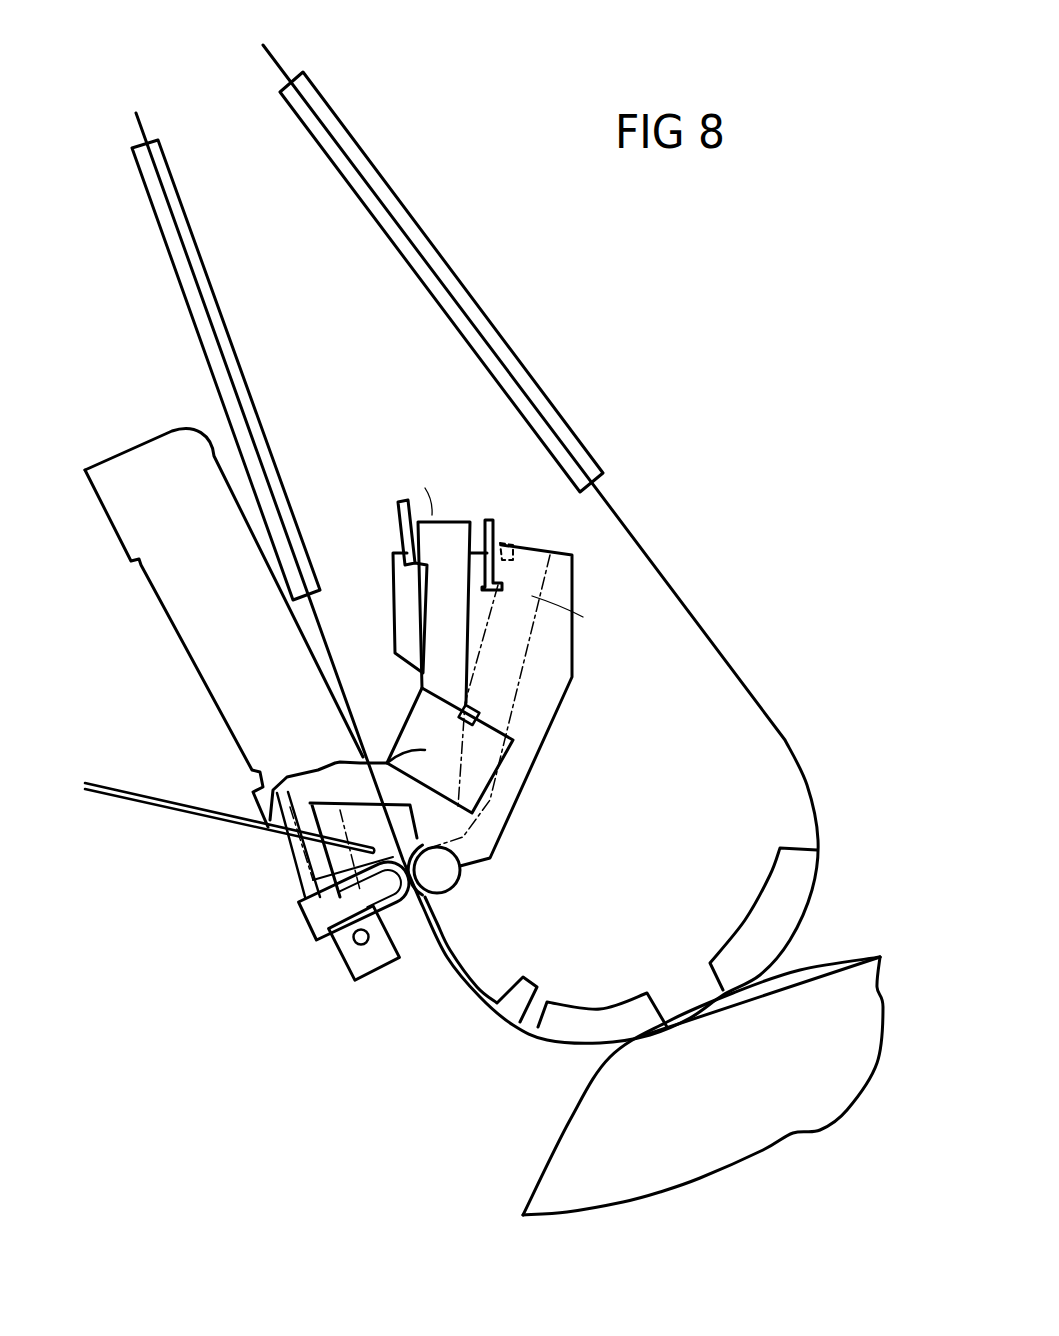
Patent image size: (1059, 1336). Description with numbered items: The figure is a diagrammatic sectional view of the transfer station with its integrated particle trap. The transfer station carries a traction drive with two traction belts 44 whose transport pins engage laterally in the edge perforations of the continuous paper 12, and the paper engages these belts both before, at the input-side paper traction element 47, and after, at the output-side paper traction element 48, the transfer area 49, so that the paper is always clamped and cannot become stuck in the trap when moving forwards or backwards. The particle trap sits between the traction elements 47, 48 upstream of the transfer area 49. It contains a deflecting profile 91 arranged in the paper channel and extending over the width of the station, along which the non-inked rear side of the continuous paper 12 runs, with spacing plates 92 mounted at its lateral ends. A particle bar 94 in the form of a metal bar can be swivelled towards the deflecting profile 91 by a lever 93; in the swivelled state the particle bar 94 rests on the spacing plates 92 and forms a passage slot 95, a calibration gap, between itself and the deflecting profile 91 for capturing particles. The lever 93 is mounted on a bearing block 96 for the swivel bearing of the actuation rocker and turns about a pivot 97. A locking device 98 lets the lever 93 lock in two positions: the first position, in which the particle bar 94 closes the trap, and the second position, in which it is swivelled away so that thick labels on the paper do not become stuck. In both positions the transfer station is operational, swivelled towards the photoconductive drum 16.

The continuous paper 12 is at (522, 1030).
The photoconductive drum 16 is at (753, 1137).
The traction belts 44 is at (300, 128).
The input-side paper traction element 47 is at (158, 234).
The output-side paper traction element 48 is at (400, 198).
The transfer area 49 is at (700, 1010).
The deflecting profile 91 is at (440, 866).
The spacing plates 92 is at (455, 885).
The lever 93 is at (517, 555).
The particle bar 94 is at (307, 927).
The passage slot 95 is at (397, 855).
The bearing block 96 is at (190, 618).
The pivot 97 is at (367, 947).
The locking device 98 is at (490, 758).